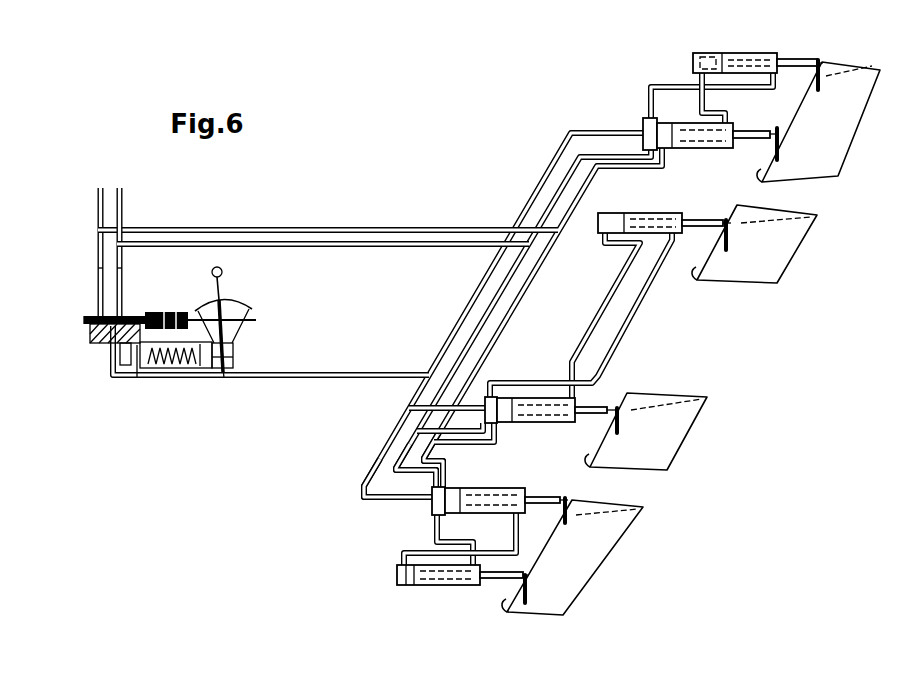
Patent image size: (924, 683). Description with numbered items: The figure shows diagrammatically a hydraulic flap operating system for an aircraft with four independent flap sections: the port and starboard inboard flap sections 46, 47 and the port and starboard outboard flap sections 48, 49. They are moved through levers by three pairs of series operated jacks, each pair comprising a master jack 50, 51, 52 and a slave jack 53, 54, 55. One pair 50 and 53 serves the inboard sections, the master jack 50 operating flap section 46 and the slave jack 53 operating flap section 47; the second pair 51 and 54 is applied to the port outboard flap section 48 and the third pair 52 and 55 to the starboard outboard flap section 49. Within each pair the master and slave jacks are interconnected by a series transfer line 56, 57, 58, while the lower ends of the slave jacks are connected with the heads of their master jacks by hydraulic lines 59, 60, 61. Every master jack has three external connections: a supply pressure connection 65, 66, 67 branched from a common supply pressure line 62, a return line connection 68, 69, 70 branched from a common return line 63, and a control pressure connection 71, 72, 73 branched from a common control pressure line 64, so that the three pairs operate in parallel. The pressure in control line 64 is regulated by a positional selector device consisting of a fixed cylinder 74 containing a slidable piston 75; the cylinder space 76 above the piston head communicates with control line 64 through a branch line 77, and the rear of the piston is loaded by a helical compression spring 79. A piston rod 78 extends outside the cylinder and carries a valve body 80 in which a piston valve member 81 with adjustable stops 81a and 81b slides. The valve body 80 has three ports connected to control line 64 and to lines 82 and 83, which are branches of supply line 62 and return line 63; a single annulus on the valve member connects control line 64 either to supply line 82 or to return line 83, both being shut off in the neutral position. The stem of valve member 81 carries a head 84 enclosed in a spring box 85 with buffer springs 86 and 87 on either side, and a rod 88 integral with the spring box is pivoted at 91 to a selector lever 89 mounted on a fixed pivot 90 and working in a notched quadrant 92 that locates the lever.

The port inboard flap section 46 is at (672, 430).
The starboard inboard flap section 47 is at (775, 254).
The port outboard flap section 48 is at (597, 541).
The starboard outboard flap section 49 is at (833, 139).
The master jack 50 is at (505, 396).
The master jack 51 is at (492, 500).
The master jack 52 is at (713, 150).
The slave jack 53 is at (660, 215).
The slave jack 54 is at (423, 578).
The slave jack 55 is at (714, 58).
The series transfer line 56 is at (577, 358).
The series transfer line 57 is at (517, 529).
The series transfer line 58 is at (703, 108).
The hydraulic line 59 is at (635, 322).
The hydraulic line 60 is at (455, 540).
The hydraulic line 61 is at (668, 84).
The common supply pressure line 62 is at (475, 210).
The common return line 63 is at (465, 248).
The common control pressure line 64 is at (330, 374).
The supply pressure connection 65 is at (496, 442).
The supply pressure connection 66 is at (428, 456).
The supply pressure connection 67 is at (632, 168).
The return line connection 68 is at (463, 430).
The return line connection 69 is at (398, 461).
The return line connection 70 is at (577, 168).
The control pressure connection 71 is at (423, 408).
The control pressure connection 72 is at (402, 501).
The control pressure connection 73 is at (592, 131).
The fixed cylinder 74 is at (190, 369).
The slidable piston 75 is at (222, 352).
The cylinder space 76 is at (224, 365).
The branch line 77 is at (224, 376).
The piston rod 78 is at (137, 378).
The helical compression spring 79 is at (165, 368).
The valve body 80 is at (102, 335).
The piston valve member 81 is at (93, 327).
The adjustable stop 81a is at (88, 319).
The adjustable stop 81b is at (155, 316).
The supply pressure line 82 is at (100, 262).
The return line 83 is at (121, 270).
The head 84 is at (170, 313).
The spring box 85 is at (124, 341).
The buffer spring 86 is at (160, 312).
The buffer spring 87 is at (183, 312).
The rod 88 is at (186, 313).
The selector lever 89 is at (219, 290).
The fixed pivot 90 is at (226, 343).
The pivot 91 is at (213, 320).
The quadrant 92 is at (250, 309).